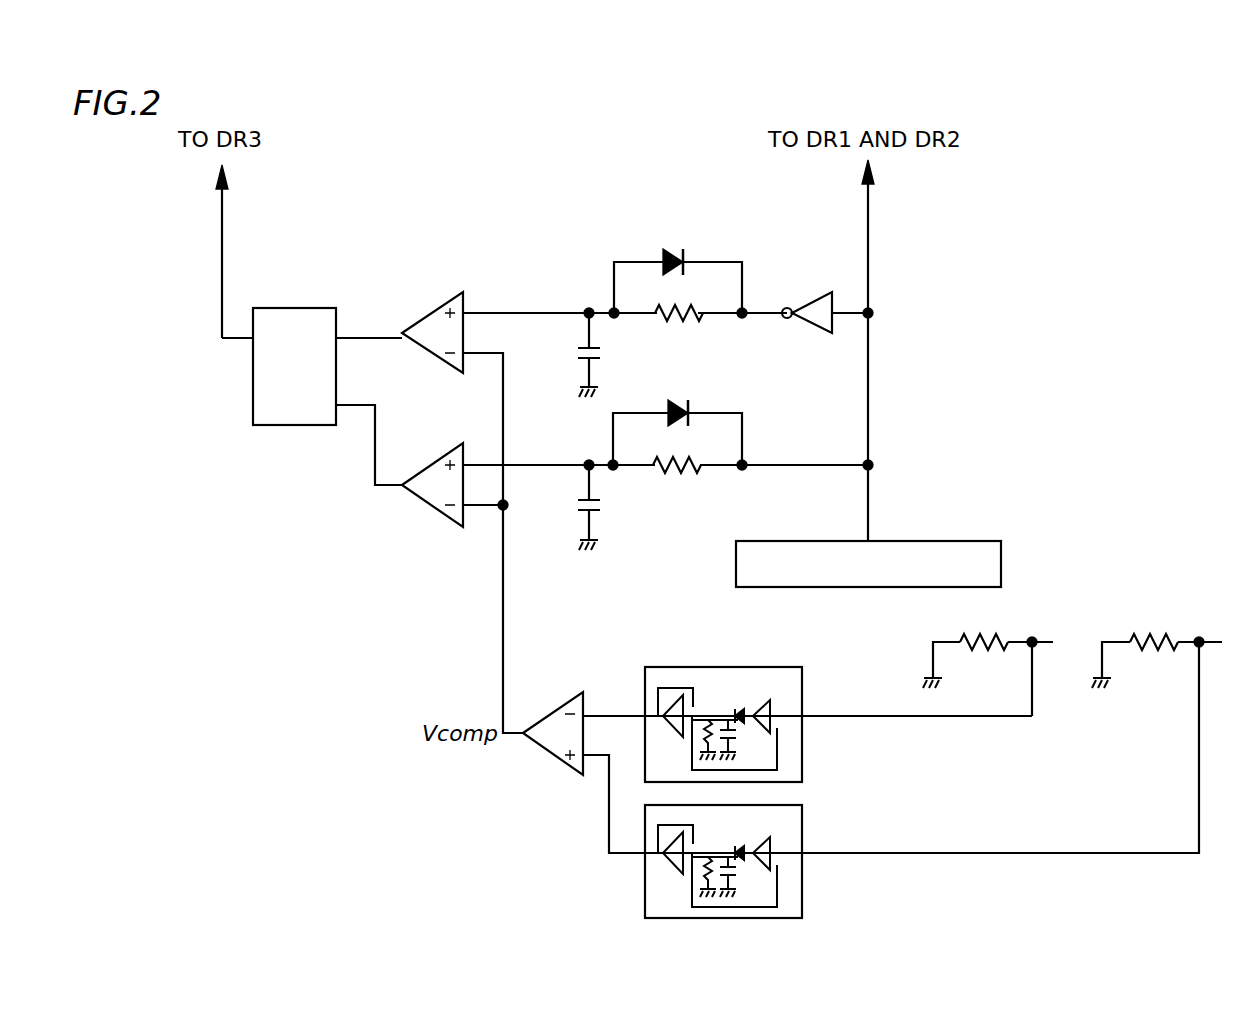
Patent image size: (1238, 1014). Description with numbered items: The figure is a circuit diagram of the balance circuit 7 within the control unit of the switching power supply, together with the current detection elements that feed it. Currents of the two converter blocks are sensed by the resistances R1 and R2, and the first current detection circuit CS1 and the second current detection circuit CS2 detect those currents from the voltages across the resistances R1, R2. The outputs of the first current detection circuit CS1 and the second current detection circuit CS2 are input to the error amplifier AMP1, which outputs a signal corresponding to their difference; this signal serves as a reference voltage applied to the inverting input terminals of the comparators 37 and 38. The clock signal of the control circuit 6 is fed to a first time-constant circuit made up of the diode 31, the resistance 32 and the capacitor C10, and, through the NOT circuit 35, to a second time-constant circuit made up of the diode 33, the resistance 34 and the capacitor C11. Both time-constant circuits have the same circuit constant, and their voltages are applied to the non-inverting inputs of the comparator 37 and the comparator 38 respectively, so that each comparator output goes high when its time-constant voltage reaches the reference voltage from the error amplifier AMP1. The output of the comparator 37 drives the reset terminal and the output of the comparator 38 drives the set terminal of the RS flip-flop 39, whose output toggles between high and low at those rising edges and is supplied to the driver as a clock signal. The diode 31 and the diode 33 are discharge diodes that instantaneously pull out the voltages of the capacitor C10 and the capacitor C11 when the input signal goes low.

The balance circuit 7 is at (521, 268).
The RS flip-flop 39 is at (291, 308).
The comparator 38 is at (417, 305).
The comparator 37 is at (417, 458).
The diode 33 is at (683, 252).
The resistance 34 is at (700, 318).
The NOT circuit 35 is at (808, 298).
The diode 31 is at (688, 403).
The resistance 32 is at (700, 470).
The capacitor C11 is at (600, 358).
The capacitor C10 is at (600, 510).
The control circuit 6 is at (1001, 560).
The resistance R1 is at (1006, 640).
The resistance R2 is at (1176, 640).
The error amplifier AMP1 is at (556, 708).
The first current detection circuit CS1 is at (802, 676).
The second current detection circuit CS2 is at (802, 814).